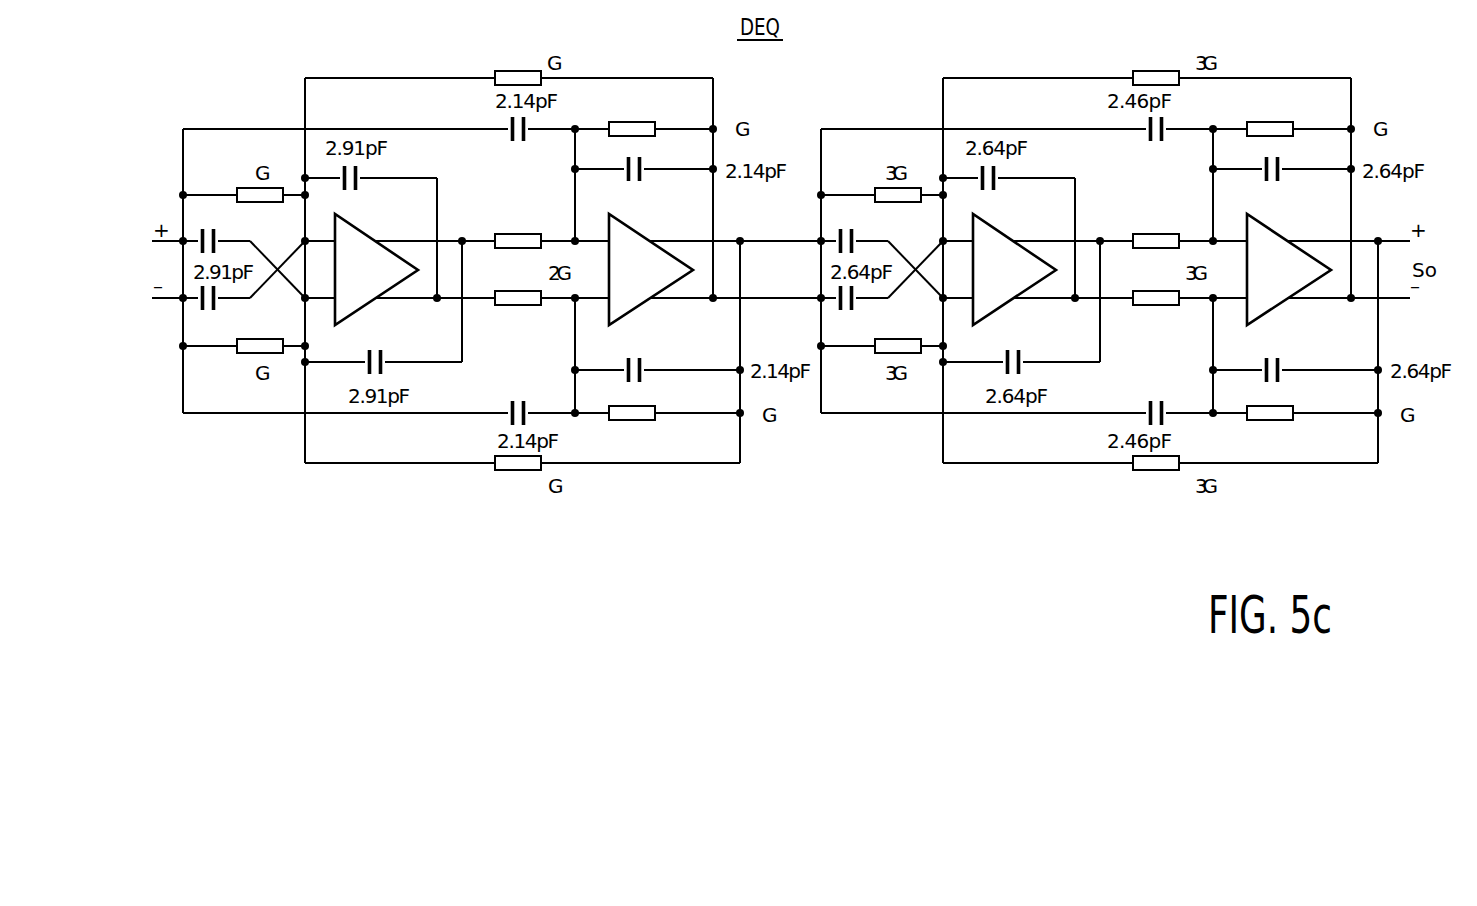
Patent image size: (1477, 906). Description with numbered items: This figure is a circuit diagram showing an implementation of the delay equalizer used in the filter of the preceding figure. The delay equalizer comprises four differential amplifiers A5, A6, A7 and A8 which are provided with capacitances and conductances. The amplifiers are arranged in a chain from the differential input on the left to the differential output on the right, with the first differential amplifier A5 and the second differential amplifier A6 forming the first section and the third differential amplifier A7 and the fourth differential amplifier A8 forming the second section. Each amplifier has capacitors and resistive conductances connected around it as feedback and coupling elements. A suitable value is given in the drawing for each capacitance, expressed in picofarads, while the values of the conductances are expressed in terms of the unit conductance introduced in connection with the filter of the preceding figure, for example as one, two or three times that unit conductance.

The differential amplifier A5 is at (376, 269).
The differential amplifier A6 is at (651, 269).
The differential amplifier A7 is at (1014, 269).
The differential amplifier A8 is at (1289, 269).